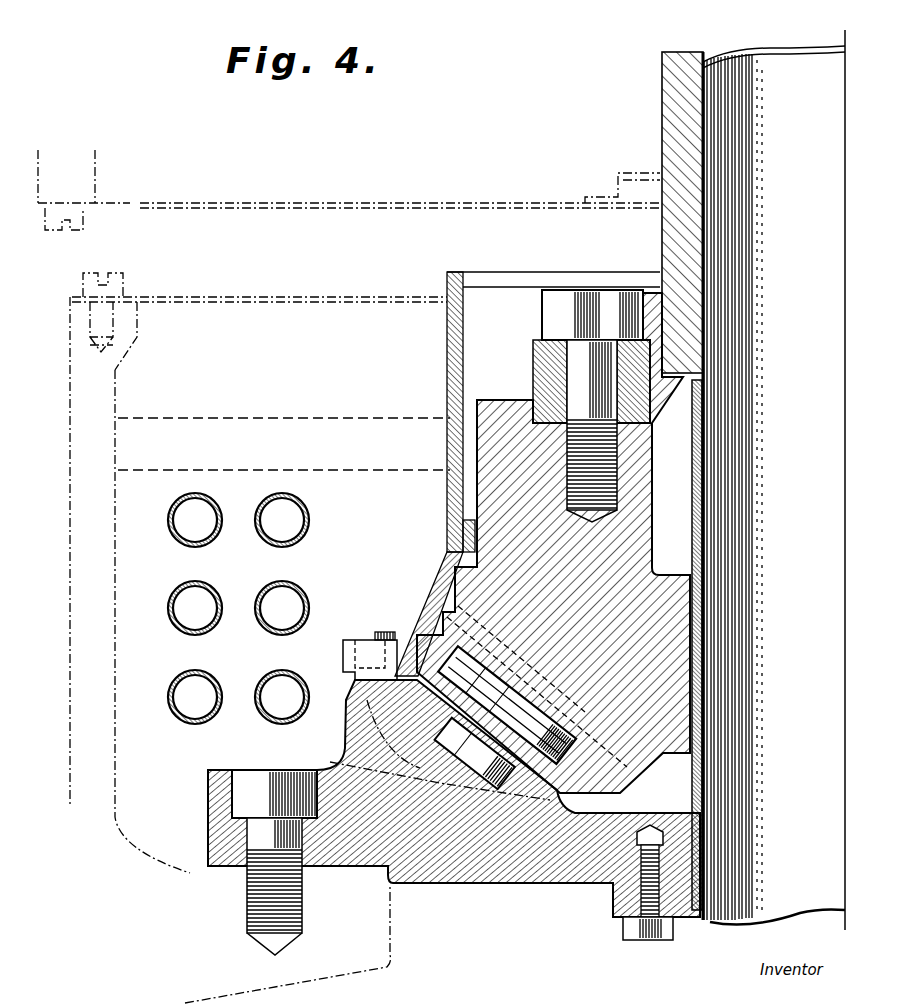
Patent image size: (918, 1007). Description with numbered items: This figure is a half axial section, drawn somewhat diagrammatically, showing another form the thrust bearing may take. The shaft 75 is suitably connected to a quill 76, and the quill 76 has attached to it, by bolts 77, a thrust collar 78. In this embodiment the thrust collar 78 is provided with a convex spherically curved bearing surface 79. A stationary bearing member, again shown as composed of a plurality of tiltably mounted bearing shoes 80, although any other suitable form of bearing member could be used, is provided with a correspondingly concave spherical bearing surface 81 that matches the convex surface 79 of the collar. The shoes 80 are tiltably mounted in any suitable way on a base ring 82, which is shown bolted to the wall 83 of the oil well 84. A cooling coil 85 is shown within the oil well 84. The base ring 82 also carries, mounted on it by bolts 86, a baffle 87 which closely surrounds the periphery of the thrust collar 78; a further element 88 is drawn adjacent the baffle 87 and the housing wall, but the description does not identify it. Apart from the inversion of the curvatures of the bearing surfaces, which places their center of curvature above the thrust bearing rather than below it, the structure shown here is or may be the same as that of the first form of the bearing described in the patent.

The shaft 75 is at (730, 115).
The quill 76 is at (678, 151).
The bolts 77 is at (590, 287).
The thrust collar 78 is at (667, 612).
The convex spherically curved bearing surface 79 is at (593, 700).
The bearing shoes 80 is at (653, 760).
The concave spherical bearing surface 81 is at (603, 720).
The base ring 82 is at (515, 865).
The wall 83 is at (108, 826).
The oil well 84 is at (175, 608).
The cooling coil 85 is at (284, 585).
The bolts 86 is at (367, 642).
The baffle 87 is at (448, 492).
The gasket 88 is at (467, 532).